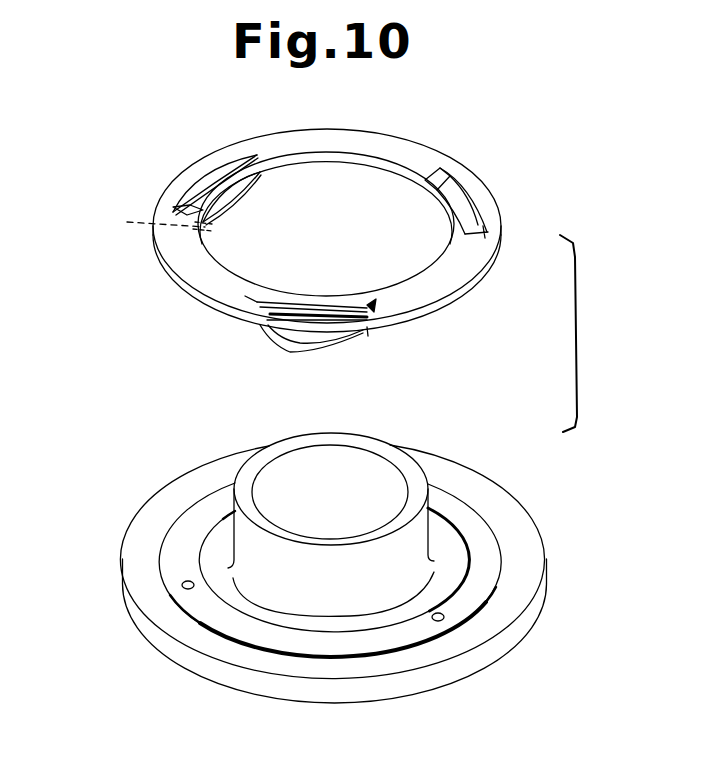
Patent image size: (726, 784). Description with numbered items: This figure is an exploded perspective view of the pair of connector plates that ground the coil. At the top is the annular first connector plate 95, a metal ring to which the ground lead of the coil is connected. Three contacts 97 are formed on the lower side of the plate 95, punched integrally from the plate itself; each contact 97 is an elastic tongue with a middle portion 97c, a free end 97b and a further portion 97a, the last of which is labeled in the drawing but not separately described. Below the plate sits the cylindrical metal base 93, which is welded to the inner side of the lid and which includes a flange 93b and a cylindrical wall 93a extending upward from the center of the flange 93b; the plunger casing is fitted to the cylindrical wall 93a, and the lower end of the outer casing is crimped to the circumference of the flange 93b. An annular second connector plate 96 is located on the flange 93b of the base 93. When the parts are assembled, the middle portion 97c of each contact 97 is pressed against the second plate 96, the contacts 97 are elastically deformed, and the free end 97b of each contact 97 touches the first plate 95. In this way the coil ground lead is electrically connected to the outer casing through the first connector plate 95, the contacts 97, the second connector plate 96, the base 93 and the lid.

The base 93 is at (333, 581).
The cylindrical wall 93a is at (373, 438).
The flange 93b is at (422, 680).
The first connector plate 95 is at (377, 131).
The second connector plate 96 is at (253, 637).
The contacts 97 is at (457, 190).
The tab upper portion 97a is at (258, 160).
The free end 97b is at (378, 352).
The middle portion 97c is at (208, 204).